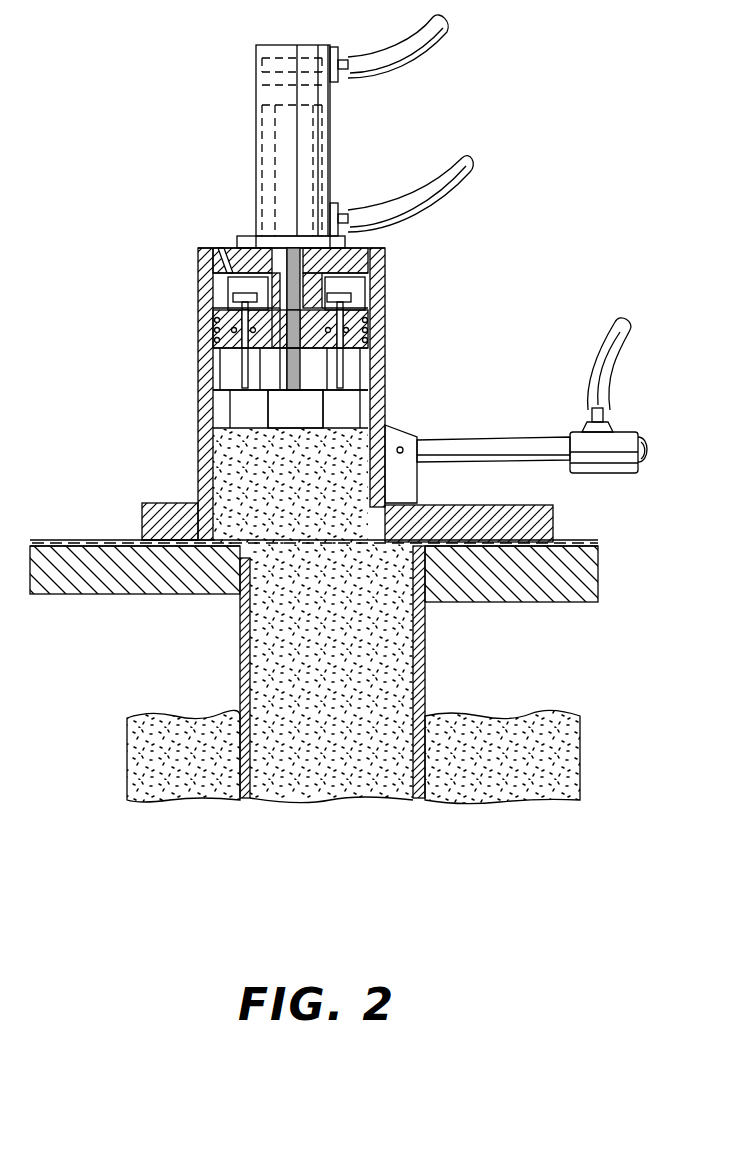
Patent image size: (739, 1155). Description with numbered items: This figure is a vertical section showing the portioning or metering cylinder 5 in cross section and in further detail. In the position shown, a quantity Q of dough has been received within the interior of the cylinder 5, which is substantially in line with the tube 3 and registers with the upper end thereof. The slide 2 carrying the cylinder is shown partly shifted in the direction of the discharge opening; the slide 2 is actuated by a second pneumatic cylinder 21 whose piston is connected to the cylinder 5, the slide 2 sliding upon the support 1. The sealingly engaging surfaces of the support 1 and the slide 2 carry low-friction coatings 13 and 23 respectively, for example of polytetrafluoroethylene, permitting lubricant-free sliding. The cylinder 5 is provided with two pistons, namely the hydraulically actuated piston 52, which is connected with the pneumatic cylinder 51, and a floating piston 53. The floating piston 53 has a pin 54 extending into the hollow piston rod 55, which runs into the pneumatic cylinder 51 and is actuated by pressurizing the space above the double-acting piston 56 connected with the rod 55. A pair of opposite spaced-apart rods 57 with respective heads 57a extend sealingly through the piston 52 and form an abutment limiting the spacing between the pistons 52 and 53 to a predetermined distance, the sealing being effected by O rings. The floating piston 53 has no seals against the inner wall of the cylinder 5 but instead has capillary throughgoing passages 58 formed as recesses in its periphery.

The support 1 is at (605, 587).
The slide 2 is at (562, 524).
The tube 3 is at (435, 667).
The portioning or metering cylinder 5 is at (216, 241).
The low-friction coating 13 is at (50, 540).
The second pneumatic cylinder 21 is at (630, 435).
The low-friction coating 23 is at (140, 540).
The pneumatic cylinder 51 is at (256, 150).
The hydraulically actuated piston 52 is at (385, 334).
The floating piston 53 is at (376, 418).
The pin 54 is at (272, 370).
The hollow piston rod 55 is at (213, 288).
The double-acting piston 56 is at (270, 88).
The rods 57 is at (372, 374).
The heads 57a is at (385, 290).
The capillary throughgoing passages 58 is at (315, 412).
The quantity of dough Q is at (213, 449).